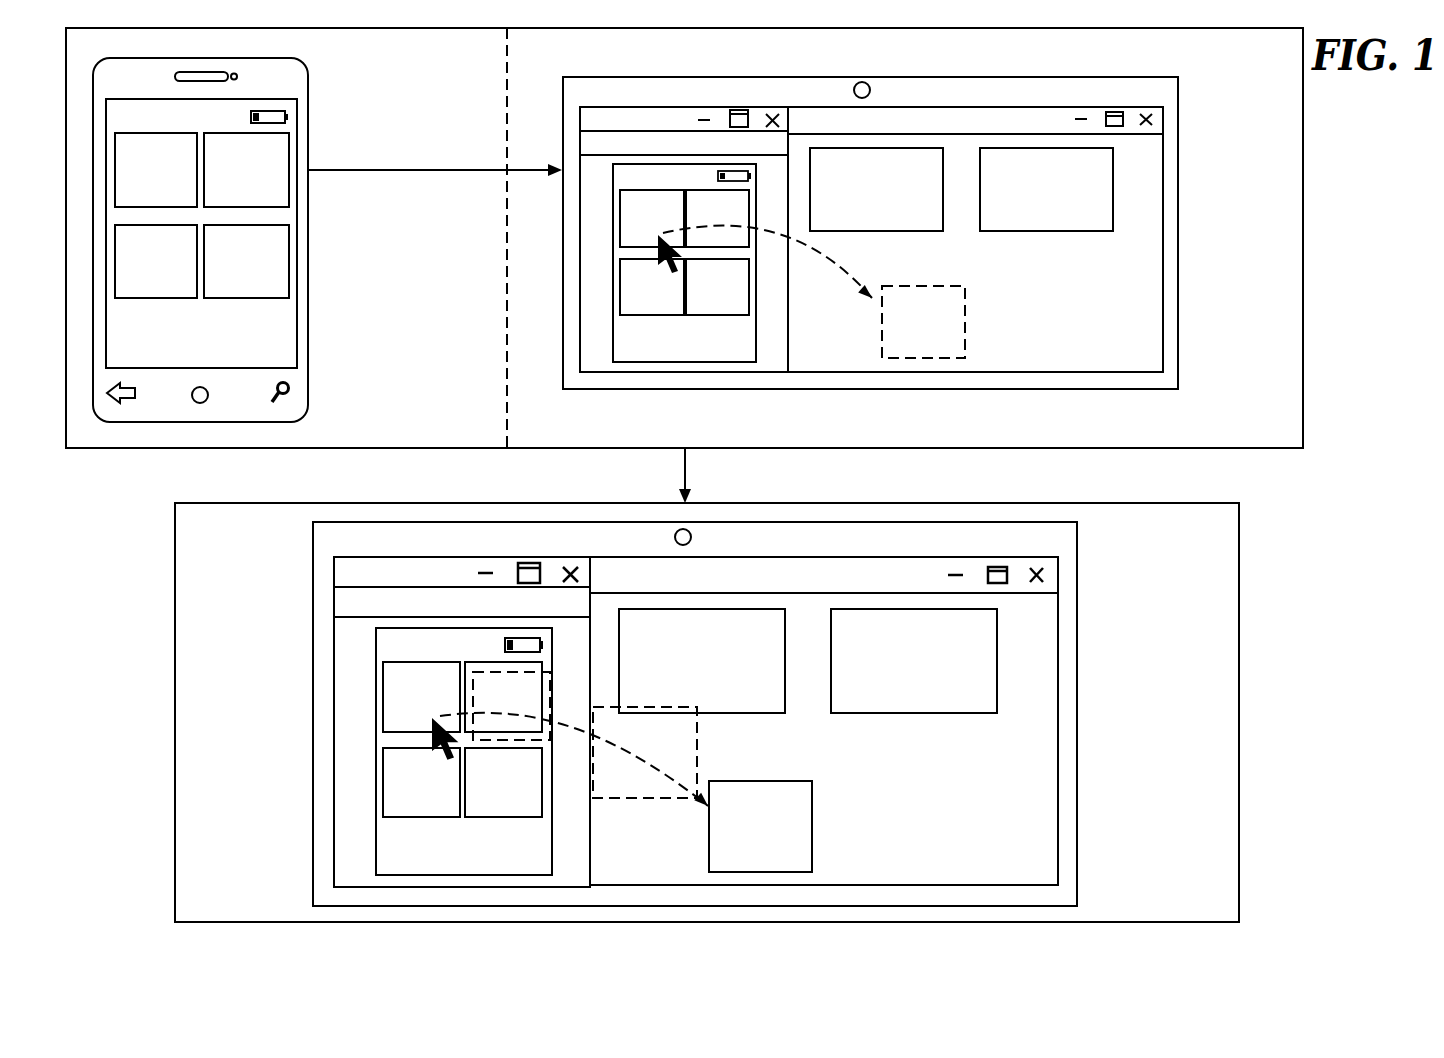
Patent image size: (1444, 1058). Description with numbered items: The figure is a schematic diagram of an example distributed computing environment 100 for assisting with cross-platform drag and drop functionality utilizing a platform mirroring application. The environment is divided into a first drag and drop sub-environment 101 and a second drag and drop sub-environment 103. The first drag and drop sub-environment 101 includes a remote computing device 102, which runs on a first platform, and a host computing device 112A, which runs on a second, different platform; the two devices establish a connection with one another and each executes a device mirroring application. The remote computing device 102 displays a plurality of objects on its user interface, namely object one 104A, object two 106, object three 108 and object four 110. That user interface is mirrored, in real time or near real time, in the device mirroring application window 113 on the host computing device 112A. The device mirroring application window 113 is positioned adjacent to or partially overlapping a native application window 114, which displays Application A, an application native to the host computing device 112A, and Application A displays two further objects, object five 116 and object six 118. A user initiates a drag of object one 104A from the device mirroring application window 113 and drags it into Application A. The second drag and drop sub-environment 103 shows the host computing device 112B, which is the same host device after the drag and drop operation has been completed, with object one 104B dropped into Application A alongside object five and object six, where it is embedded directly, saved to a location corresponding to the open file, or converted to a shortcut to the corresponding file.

The distributed computing environment 100 is at (1352, 211).
The first drag and drop sub-environment 101 is at (1285, 440).
The remote computing device 102 is at (236, 240).
The second drag and drop sub-environment 103 is at (1232, 915).
The object 1 104A is at (193, 155).
The object 1 104B is at (808, 807).
The object 2 106 is at (281, 155).
The object 3 108 is at (192, 248).
The object 4 110 is at (281, 248).
The host computing device 112A is at (911, 248).
The host computing device 112B is at (735, 708).
The device mirroring application window 113 is at (738, 335).
The native application window 114 is at (1009, 239).
The object 5 116 is at (939, 225).
The object 6 118 is at (1110, 225).